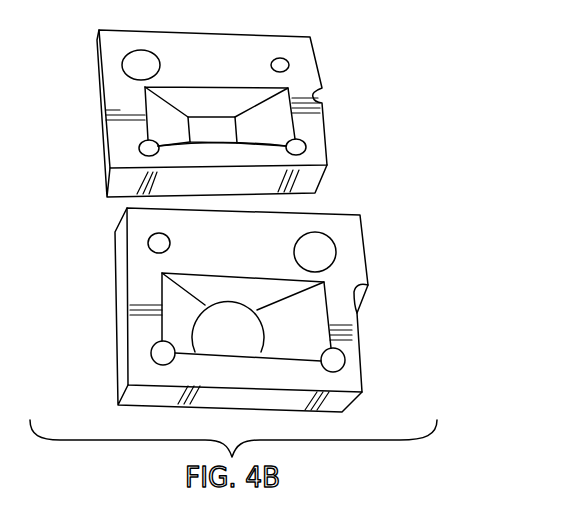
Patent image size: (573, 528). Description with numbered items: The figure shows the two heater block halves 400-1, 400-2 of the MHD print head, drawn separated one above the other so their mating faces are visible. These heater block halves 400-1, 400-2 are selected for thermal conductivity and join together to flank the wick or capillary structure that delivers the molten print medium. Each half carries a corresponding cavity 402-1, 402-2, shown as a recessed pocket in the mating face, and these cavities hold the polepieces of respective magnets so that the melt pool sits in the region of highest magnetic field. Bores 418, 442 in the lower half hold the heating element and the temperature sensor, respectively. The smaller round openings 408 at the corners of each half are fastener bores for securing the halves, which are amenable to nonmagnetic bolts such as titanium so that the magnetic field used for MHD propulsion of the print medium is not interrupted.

The heater block half 400-1 is at (313, 152).
The heater block half 400-2 is at (355, 238).
The cavity 402-1 is at (241, 128).
The cavity 402-2 is at (302, 323).
The alignment holes 408 is at (289, 65).
The bore 418 is at (325, 253).
The bore 442 is at (158, 352).